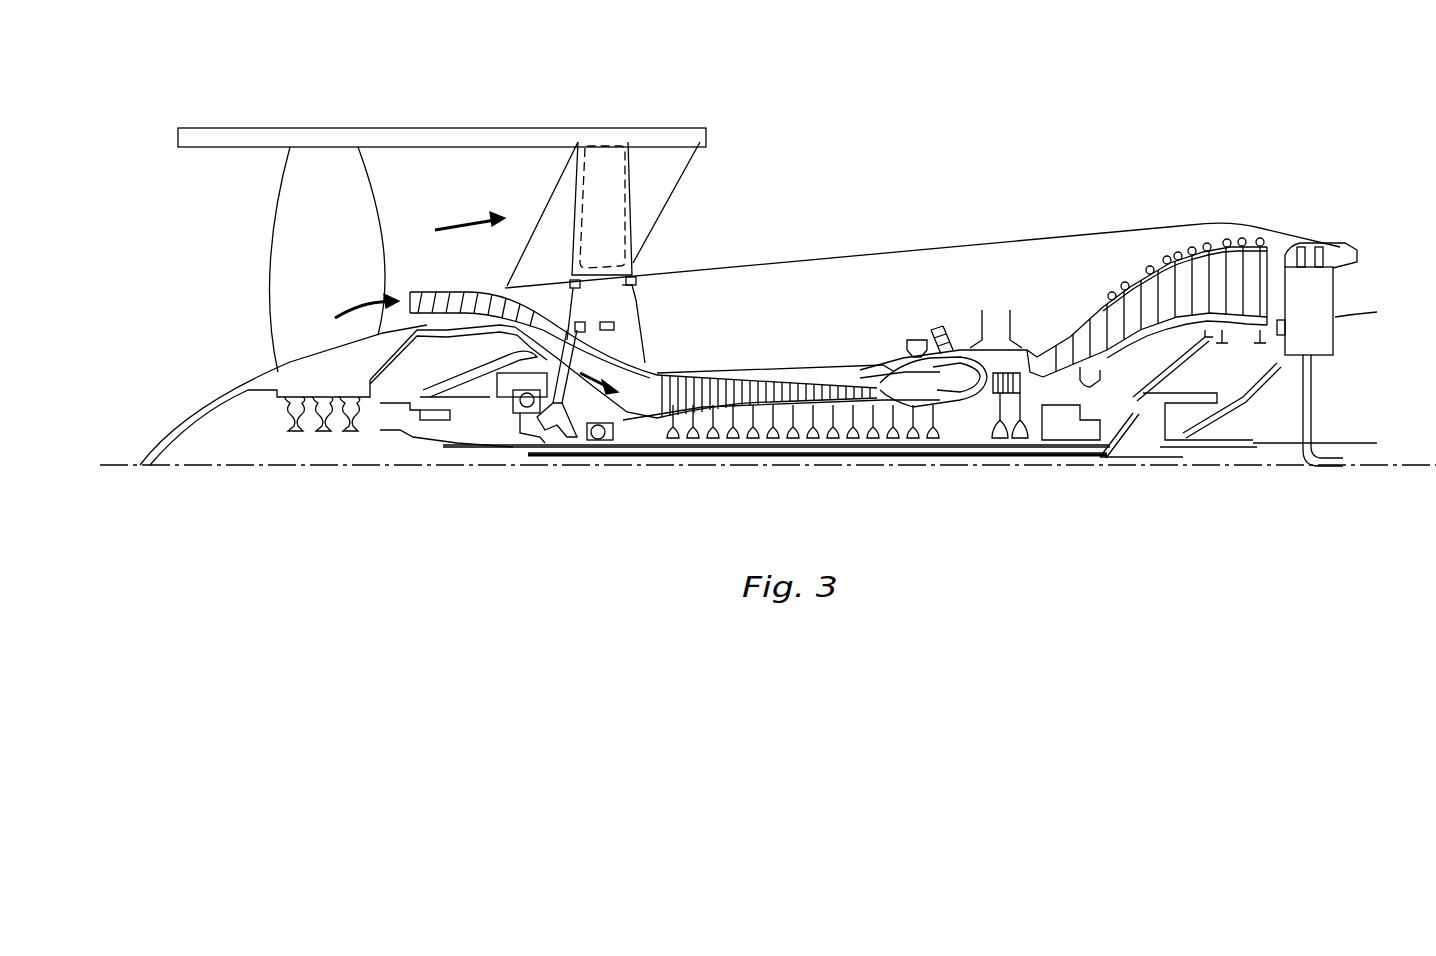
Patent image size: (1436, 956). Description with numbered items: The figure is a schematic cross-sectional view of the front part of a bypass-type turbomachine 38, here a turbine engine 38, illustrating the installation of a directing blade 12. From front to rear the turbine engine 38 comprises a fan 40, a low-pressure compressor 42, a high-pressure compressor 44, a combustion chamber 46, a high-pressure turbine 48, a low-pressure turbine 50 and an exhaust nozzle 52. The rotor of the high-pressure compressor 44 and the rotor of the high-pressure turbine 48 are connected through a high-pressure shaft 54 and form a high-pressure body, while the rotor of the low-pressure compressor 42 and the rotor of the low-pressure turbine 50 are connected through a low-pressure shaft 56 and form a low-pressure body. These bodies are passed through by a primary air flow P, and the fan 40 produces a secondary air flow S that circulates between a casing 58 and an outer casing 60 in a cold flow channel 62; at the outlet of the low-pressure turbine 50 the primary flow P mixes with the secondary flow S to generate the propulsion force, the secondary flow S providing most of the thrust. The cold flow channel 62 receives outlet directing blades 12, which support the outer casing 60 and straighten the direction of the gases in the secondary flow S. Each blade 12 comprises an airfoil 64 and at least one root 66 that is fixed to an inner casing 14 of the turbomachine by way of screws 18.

The outer casing 60 is at (358, 128).
The fan 40 is at (309, 176).
The cold flow channel 62 is at (595, 214).
The airfoil 64 is at (612, 188).
The directing blade 12 is at (607, 237).
The screws 18 is at (620, 270).
The root 66 is at (638, 278).
The inner casing 14 is at (644, 353).
The casing 58 is at (547, 278).
The low-pressure compressor 42 is at (460, 292).
The high-pressure compressor 44 is at (789, 361).
The combustion chamber 46 is at (965, 338).
The high-pressure turbine 48 is at (1033, 338).
The low-pressure turbine 50 is at (1185, 252).
The exhaust nozzle 52 is at (1337, 252).
The turbomachine 38 is at (1088, 142).
The high-pressure shaft 54 is at (933, 420).
The low-pressure shaft 56 is at (1004, 455).
The primary air flow P is at (347, 306).
The secondary air flow S is at (466, 222).